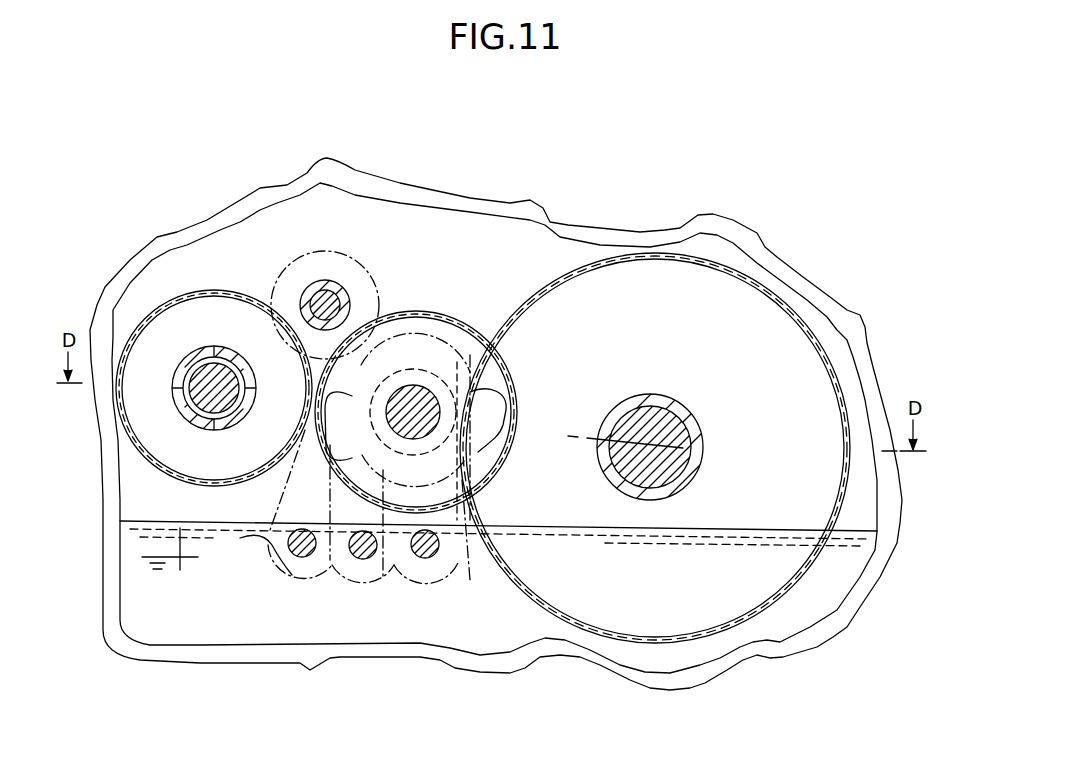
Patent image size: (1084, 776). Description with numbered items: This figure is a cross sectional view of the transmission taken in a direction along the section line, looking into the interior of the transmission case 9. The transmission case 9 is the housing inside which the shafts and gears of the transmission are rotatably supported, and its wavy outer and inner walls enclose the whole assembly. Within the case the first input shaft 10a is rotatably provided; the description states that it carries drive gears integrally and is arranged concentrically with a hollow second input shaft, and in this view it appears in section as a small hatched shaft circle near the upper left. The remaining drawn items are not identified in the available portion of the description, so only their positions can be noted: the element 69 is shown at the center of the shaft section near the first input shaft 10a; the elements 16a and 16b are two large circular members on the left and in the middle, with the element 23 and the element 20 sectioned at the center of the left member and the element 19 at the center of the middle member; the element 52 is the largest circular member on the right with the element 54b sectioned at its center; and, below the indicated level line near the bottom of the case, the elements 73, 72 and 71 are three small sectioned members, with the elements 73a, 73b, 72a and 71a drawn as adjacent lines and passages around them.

The transmission case 9 is at (535, 206).
The shaft 69 is at (325, 297).
The gear 16a is at (216, 300).
The first input shaft 10a is at (346, 292).
The gear 16b is at (432, 338).
The shaft 19 is at (425, 405).
The output shaft 54b is at (686, 488).
The bearing 23 is at (178, 392).
The shaft 20 is at (207, 398).
The oil passage 73a is at (254, 548).
The oil hole 73b is at (183, 540).
The oil pipe 73 is at (297, 558).
The oil pipe 72 is at (362, 560).
The oil passage 72a is at (383, 580).
The oil pipe 71 is at (425, 559).
The oil passage 71a is at (470, 580).
The gear 52 is at (580, 587).